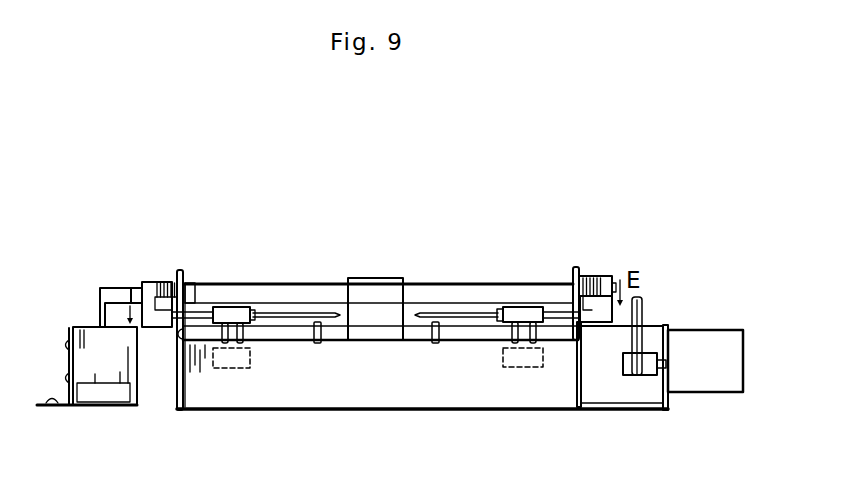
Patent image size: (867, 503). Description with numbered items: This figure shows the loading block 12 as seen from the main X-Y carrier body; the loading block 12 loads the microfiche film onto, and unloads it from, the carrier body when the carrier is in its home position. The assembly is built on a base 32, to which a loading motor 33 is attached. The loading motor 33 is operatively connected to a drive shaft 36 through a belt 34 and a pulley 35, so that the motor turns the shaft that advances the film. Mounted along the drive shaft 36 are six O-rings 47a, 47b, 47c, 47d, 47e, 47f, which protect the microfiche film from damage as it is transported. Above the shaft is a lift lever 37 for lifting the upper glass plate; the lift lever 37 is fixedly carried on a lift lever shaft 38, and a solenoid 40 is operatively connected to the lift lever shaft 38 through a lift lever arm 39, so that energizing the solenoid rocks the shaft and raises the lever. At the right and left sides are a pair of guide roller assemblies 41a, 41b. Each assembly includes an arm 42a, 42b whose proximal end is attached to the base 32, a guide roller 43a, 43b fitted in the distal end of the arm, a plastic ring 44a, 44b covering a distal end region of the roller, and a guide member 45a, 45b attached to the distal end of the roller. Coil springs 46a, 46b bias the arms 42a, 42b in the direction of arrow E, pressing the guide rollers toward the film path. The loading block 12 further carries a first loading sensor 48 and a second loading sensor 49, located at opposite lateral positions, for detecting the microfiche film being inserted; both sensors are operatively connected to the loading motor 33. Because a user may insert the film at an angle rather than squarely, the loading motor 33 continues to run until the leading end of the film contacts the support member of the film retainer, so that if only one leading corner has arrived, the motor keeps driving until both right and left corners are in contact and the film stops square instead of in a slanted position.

The loading block 12 is at (465, 176).
The base 32 is at (636, 411).
The loading motor 33 is at (712, 329).
The belt 34 is at (649, 351).
The pulley 35 is at (641, 333).
The drive shaft 36 is at (467, 341).
The lift lever 37 is at (383, 275).
The lift lever shaft 38 is at (436, 280).
The lift lever arm 39 is at (118, 286).
The solenoid 40 is at (76, 323).
The guide roller assembly 41a is at (650, 196).
The guide roller assembly 41b is at (312, 196).
The arm 42a is at (611, 271).
The arm 42b is at (150, 281).
The guide roller 43a is at (584, 295).
The guide roller 43b is at (193, 282).
The plastic ring 44a is at (519, 306).
The plastic ring 44b is at (233, 306).
The guide member 45a is at (480, 311).
The guide member 45b is at (262, 312).
The coil spring 46a is at (593, 275).
The coil spring 46b is at (160, 281).
The O-ring 47a is at (223, 343).
The O-ring 47b is at (241, 343).
The O-ring 47c is at (319, 344).
The O-ring 47d is at (435, 344).
The O-ring 47e is at (515, 344).
The O-ring 47f is at (534, 344).
The first loading sensor 48 is at (233, 368).
The second loading sensor 49 is at (526, 367).